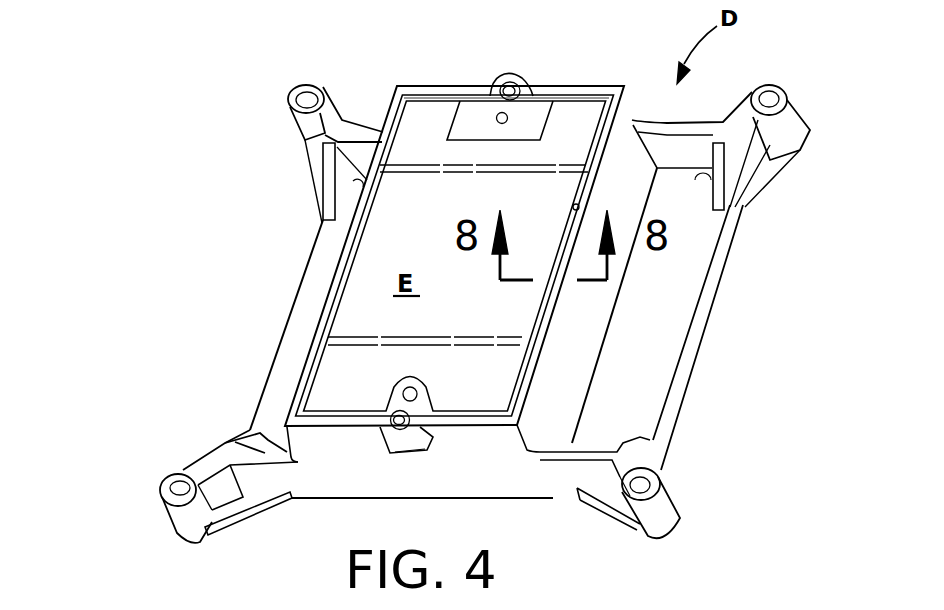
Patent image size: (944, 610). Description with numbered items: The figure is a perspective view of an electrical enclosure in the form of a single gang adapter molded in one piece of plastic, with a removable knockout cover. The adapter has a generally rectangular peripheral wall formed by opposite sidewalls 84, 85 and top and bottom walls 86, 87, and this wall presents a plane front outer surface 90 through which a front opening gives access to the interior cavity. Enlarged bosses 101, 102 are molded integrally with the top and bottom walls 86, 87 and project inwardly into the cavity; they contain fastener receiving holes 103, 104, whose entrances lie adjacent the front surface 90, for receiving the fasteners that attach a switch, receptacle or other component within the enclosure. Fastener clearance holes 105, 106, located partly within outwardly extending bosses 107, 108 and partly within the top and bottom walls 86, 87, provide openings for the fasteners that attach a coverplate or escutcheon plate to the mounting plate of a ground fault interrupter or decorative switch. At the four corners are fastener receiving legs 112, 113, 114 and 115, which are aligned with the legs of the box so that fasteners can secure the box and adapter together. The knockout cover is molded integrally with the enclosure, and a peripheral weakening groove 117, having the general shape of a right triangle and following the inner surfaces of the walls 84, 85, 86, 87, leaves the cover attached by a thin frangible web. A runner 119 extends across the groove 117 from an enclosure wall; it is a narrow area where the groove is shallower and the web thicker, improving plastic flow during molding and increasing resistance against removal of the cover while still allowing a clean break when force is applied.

The sidewall 84 is at (308, 350).
The sidewall 85 is at (587, 327).
The top wall 86 is at (415, 85).
The bottom wall 87 is at (535, 485).
The front outer surface 90 is at (332, 297).
The boss 101 is at (533, 110).
The boss 102 is at (432, 388).
The fastener receiving hole 103 is at (500, 113).
The fastener receiving hole 104 is at (400, 390).
The fastener clearance hole 105 is at (503, 83).
The fastener clearance hole 106 is at (392, 432).
The outwardly extending boss 107 is at (517, 80).
The outwardly extending boss 108 is at (412, 448).
The fastener receiving leg 112 is at (290, 123).
The fastener receiving leg 113 is at (803, 100).
The fastener receiving leg 114 is at (677, 505).
The fastener receiving leg 115 is at (170, 523).
The peripheral weakening groove 117 is at (355, 252).
The runner 119 is at (578, 207).